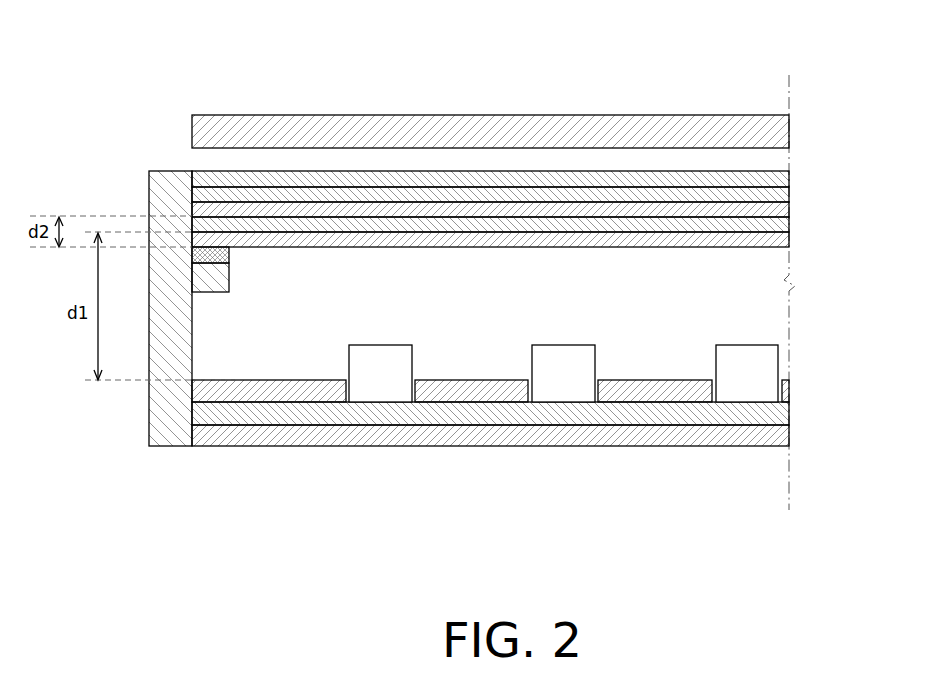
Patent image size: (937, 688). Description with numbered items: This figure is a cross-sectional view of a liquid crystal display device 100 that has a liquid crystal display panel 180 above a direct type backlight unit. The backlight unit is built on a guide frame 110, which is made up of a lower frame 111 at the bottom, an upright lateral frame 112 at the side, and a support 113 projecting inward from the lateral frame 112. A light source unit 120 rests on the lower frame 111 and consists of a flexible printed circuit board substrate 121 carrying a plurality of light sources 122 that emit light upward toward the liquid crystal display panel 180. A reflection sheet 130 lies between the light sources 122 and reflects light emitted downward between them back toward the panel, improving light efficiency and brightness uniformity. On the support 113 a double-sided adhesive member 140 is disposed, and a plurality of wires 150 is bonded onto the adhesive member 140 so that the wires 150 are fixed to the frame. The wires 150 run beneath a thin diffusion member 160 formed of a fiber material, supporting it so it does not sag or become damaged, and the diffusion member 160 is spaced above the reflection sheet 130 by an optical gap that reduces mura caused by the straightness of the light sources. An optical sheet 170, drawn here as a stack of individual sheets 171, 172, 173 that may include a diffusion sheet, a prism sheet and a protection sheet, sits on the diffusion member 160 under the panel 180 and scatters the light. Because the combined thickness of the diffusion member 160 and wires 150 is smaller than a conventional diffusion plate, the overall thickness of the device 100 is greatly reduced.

The liquid crystal display device 100 is at (778, 46).
The guide frame 110 is at (292, 527).
The lower frame 111 is at (292, 433).
The lateral frame 112 is at (170, 435).
The support 113 is at (220, 277).
The light source unit 120 is at (862, 358).
The substrate 121 is at (773, 418).
The light sources 122 is at (757, 365).
The reflection sheet 130 is at (672, 390).
The double-sided adhesive member 140 is at (212, 258).
The wires 150 is at (777, 238).
The diffusion member 160 is at (777, 224).
The optical sheet 170 is at (862, 155).
The first optical sheet 171 is at (777, 208).
The second optical sheet 172 is at (777, 194).
The third optical sheet 173 is at (777, 183).
The liquid crystal display panel 180 is at (775, 125).